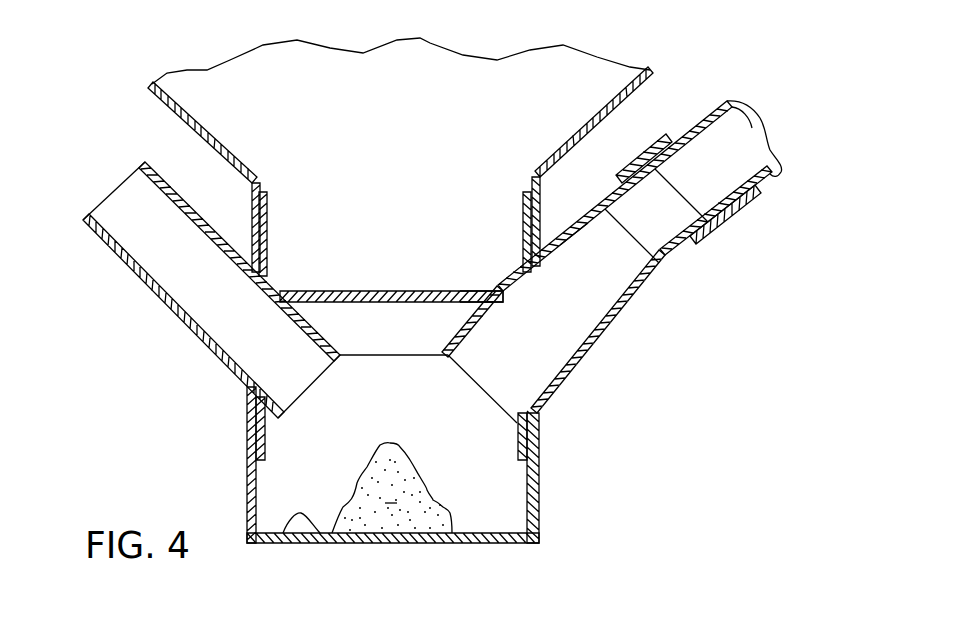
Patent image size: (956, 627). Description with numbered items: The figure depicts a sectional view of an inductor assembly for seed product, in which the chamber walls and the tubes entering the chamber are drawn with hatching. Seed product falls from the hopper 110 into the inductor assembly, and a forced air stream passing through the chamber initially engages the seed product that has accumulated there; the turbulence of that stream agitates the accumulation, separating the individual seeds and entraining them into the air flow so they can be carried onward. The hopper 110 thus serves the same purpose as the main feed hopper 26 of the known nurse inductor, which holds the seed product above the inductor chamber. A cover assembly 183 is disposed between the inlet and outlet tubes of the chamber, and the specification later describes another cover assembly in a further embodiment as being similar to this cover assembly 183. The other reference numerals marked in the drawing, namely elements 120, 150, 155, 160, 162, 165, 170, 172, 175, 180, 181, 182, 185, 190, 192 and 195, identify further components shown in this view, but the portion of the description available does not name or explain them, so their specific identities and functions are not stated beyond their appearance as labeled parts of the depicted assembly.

The main feed hopper 26 is at (632, 104).
The hopper 110 is at (395, 157).
The flexible conduit end 120 is at (731, 105).
The collection bin 150 is at (422, 496).
The bin left side wall 155 is at (246, 492).
The bin right side wall 160 is at (538, 527).
The deflector bottom edge 162 is at (416, 352).
The bin floor 165 is at (389, 545).
The bin interior 170 is at (491, 461).
The residual material 172 is at (292, 520).
The left discharge chute 175 is at (187, 277).
The right discharge conduit 180 is at (647, 224).
The chute upper wall 181 is at (108, 192).
The deflector side 182 is at (312, 388).
The cover assembly 183 is at (332, 289).
The plate joint 185 is at (470, 322).
The coupling collar 190 is at (690, 252).
The conduit lower wall 192 is at (745, 213).
The conduit upper wall seal 195 is at (572, 234).